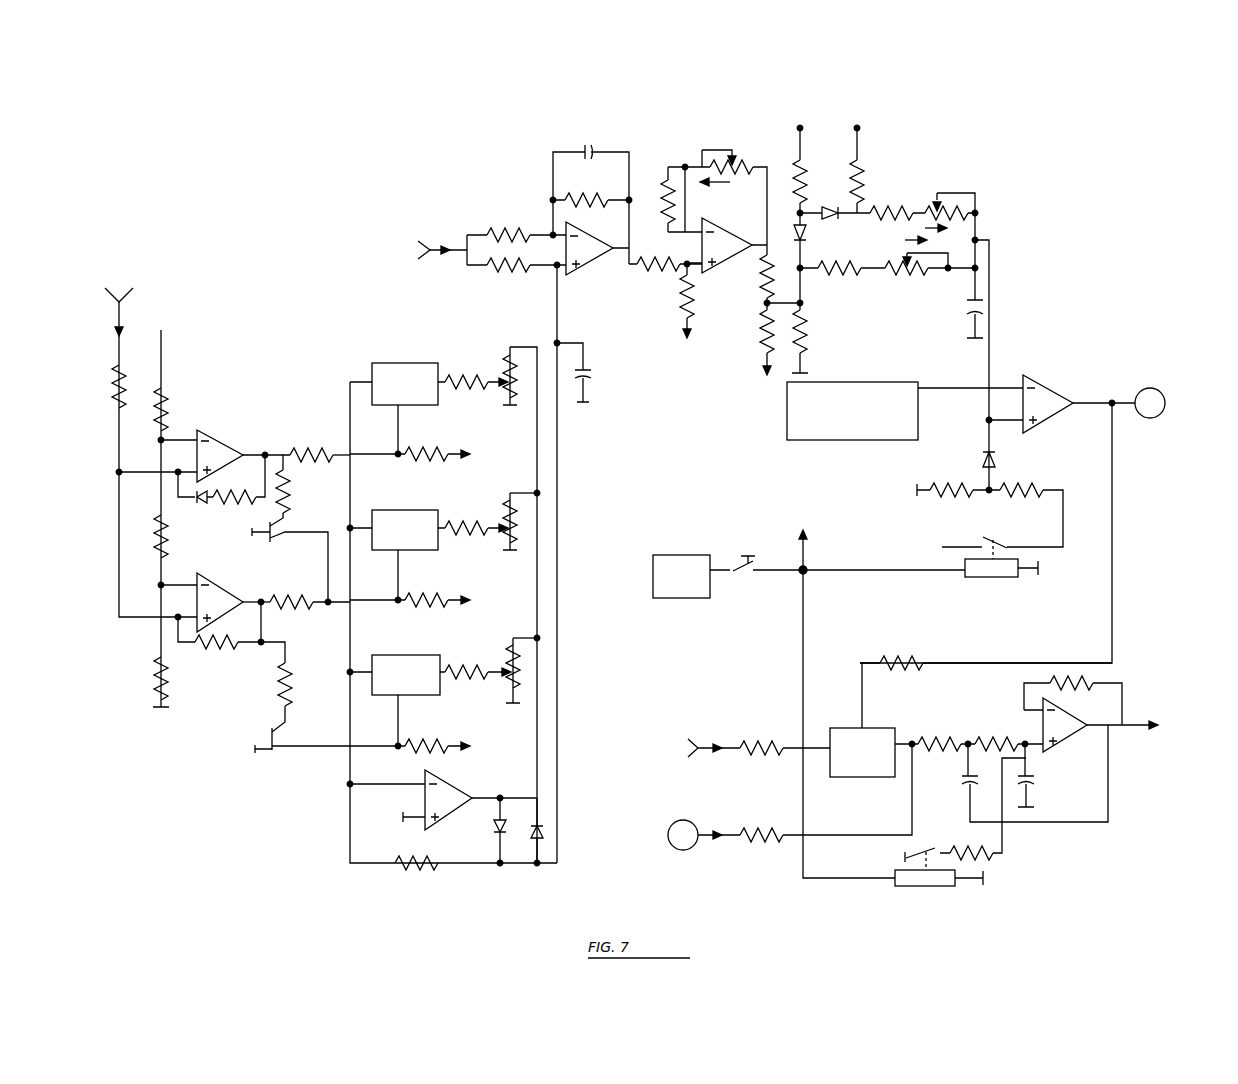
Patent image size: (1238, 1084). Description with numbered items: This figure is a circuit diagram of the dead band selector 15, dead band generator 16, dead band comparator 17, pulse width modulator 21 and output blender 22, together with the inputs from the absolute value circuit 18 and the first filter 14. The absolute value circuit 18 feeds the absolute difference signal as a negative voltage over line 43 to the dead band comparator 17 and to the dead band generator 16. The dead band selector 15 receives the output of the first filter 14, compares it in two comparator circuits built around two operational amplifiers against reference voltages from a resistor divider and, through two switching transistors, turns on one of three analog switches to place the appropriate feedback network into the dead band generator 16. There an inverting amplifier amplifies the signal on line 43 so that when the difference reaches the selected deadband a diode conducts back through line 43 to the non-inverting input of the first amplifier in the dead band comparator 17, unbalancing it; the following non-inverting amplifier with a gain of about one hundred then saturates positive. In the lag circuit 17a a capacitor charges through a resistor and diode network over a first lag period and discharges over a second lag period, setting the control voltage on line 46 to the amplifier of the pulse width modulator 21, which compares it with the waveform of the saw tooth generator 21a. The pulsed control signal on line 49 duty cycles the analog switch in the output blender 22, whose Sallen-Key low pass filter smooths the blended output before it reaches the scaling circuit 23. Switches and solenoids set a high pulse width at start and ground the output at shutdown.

The first filter 14 is at (131, 262).
The dead band selector 15 is at (205, 738).
The dead band generator 16 is at (360, 897).
The dead band comparator 17 is at (530, 170).
The lag circuit 17a is at (998, 226).
The absolute value circuit 18 is at (378, 255).
The pulse width modulator 21 is at (886, 468).
The saw tooth generator 21a is at (787, 431).
The output blender 22 is at (986, 652).
The scaling circuit 23 is at (1188, 724).
The line 43 is at (557, 454).
The line 46 is at (990, 322).
The line 49 is at (1112, 578).